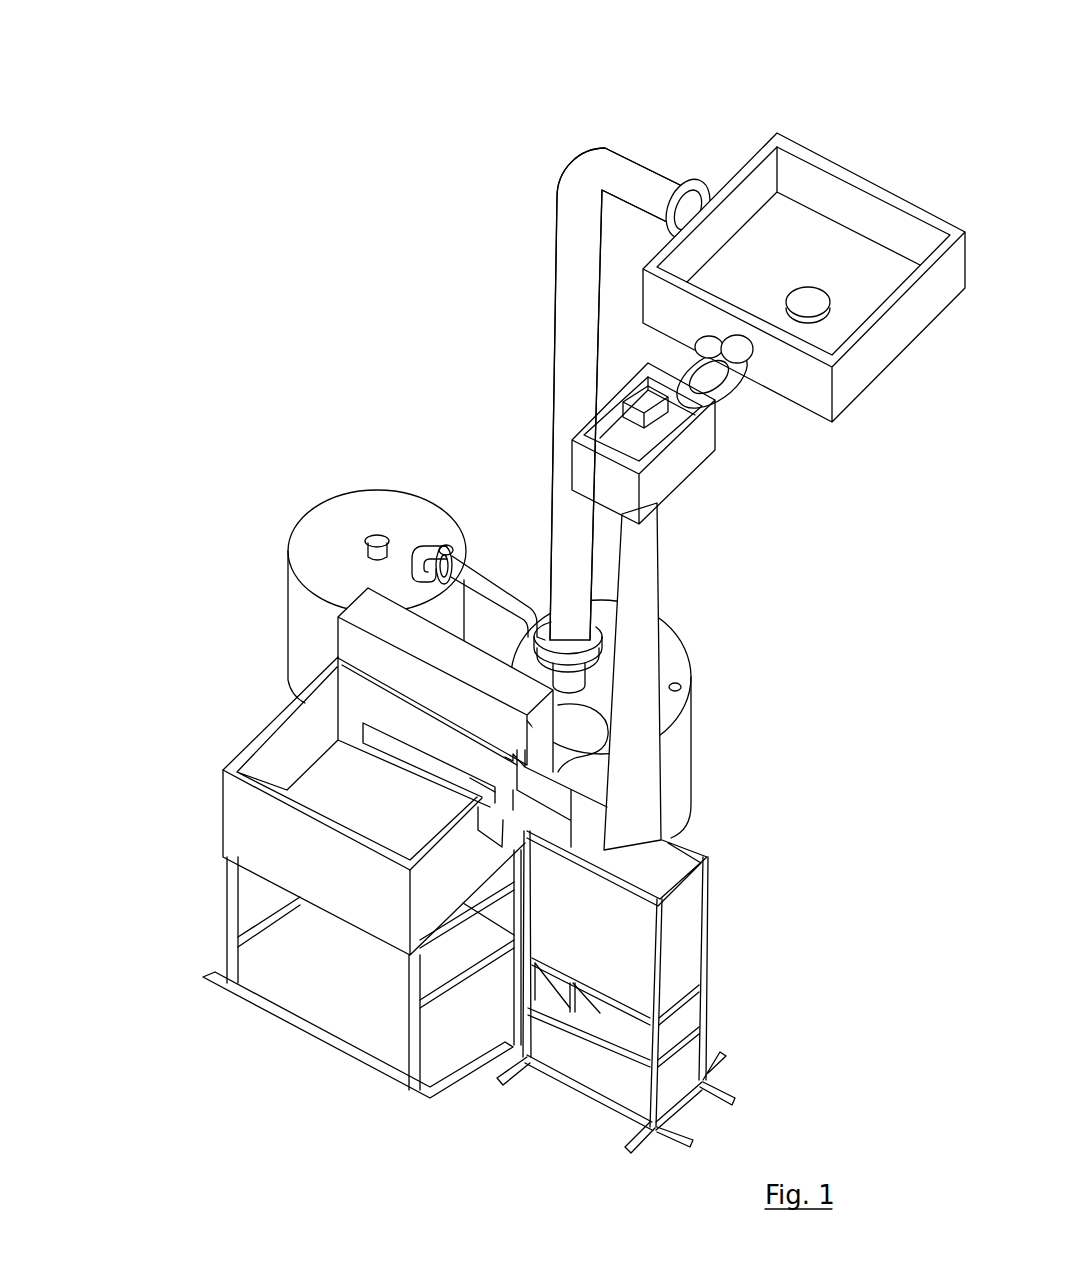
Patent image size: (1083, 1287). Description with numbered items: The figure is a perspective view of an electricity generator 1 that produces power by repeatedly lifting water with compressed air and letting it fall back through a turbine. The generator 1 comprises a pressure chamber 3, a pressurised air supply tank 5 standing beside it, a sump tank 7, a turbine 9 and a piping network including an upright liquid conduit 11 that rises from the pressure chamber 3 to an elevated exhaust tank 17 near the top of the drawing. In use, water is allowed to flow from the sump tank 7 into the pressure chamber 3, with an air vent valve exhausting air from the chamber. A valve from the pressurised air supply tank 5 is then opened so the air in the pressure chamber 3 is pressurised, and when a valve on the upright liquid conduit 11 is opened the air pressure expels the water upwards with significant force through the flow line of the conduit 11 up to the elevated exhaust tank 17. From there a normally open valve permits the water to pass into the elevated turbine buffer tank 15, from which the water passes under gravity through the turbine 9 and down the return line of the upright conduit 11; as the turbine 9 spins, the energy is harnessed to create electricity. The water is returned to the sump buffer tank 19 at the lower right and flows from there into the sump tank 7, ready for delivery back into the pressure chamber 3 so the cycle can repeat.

The electricity generator 1 is at (178, 122).
The pressure chamber 3 is at (680, 735).
The pressurised air supply tank 5 is at (315, 527).
The sump tank 7 is at (223, 912).
The turbine 9 is at (686, 473).
The upright liquid conduit 11 is at (602, 499).
The elevated turbine buffer tank 15 is at (657, 482).
The elevated exhaust tank 17 is at (908, 192).
The sump buffer tank 19 is at (693, 903).